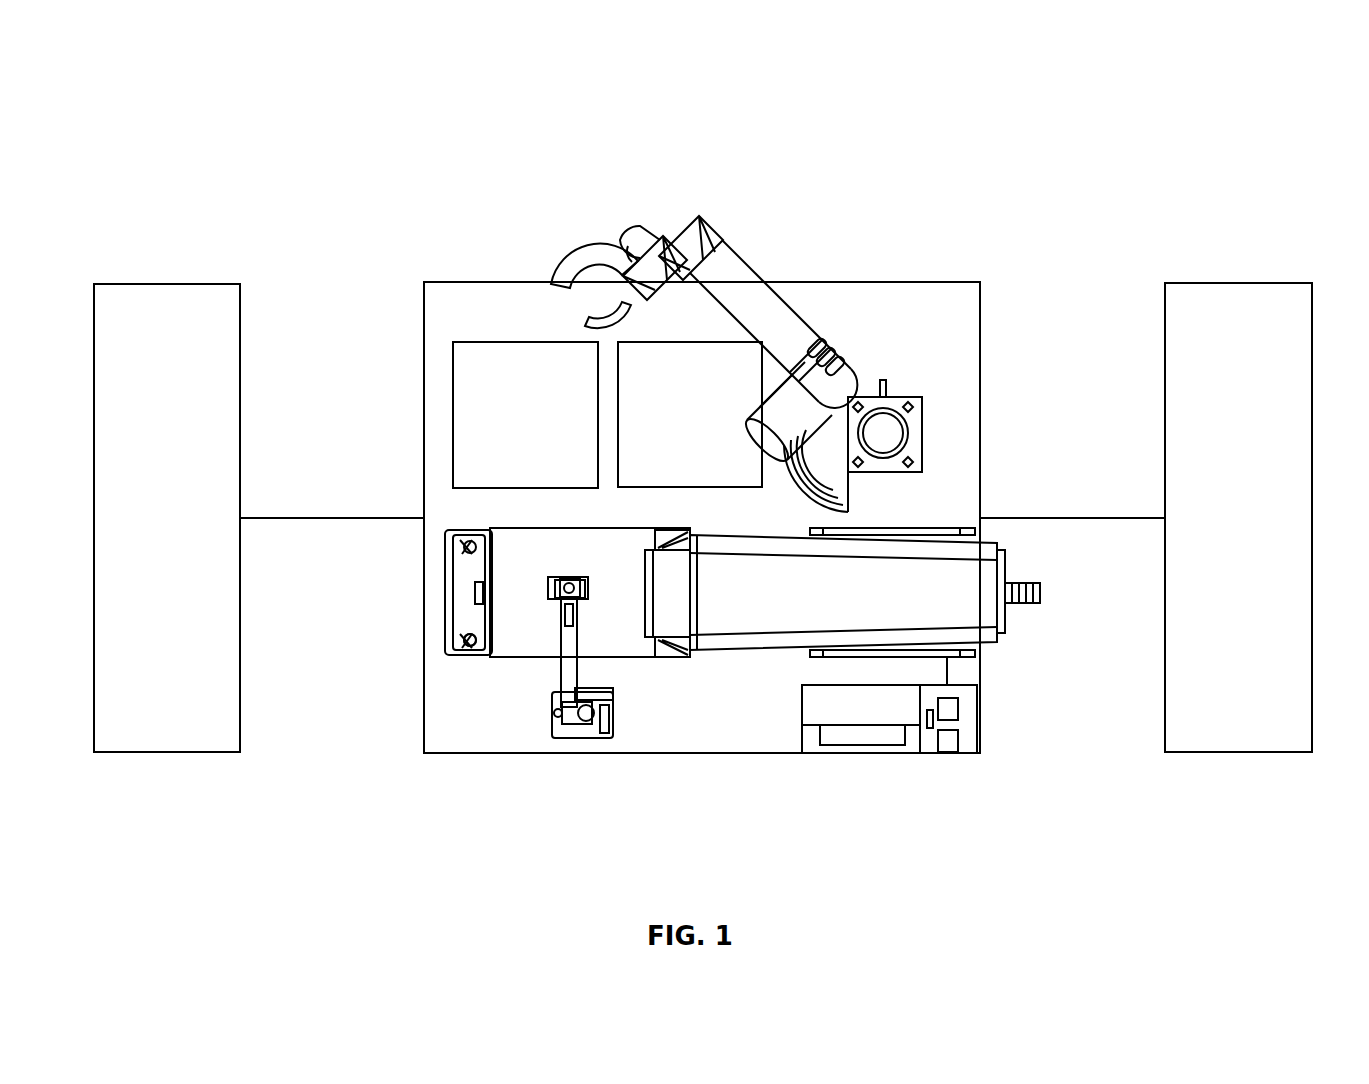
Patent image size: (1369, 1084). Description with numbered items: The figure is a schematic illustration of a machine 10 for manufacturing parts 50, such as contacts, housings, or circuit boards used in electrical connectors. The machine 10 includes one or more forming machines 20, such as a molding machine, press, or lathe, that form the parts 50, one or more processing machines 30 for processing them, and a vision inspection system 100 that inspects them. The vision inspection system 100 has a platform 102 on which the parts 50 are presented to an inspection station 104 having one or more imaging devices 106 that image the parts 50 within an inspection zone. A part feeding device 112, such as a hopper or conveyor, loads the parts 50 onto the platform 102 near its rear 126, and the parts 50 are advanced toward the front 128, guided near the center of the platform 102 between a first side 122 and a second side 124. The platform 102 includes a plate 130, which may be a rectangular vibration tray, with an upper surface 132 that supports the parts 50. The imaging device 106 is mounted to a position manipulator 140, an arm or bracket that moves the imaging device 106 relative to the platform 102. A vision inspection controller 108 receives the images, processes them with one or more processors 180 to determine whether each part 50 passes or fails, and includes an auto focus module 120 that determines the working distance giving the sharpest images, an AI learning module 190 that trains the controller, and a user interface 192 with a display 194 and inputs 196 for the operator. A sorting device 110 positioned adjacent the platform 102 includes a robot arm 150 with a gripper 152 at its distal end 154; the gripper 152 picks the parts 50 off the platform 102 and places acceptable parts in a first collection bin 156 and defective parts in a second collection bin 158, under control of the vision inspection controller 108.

The machine 10 is at (840, 110).
The forming machine 20 is at (1242, 260).
The processing machine 30 is at (158, 240).
The part 50 is at (548, 595).
The vision inspection system 100 is at (872, 220).
The platform 102 is at (603, 635).
The inspection station 104 is at (550, 685).
The imaging device 106 is at (565, 577).
The vision inspection controller 108 is at (948, 700).
The sorting device 110 is at (848, 382).
The part feeding device 112 is at (742, 608).
The auto focus module 120 is at (968, 740).
The first side 122 is at (525, 658).
The second side 124 is at (528, 528).
The rear 126 is at (670, 655).
The front 128 is at (455, 648).
The plate 130 is at (622, 562).
The upper surface 132 is at (603, 553).
The position manipulator 140 is at (568, 670).
The robot arm 150 is at (768, 325).
The gripper 152 is at (565, 253).
The distal end 154 is at (697, 235).
The first collection bin 156 is at (470, 392).
The second collection bin 158 is at (640, 375).
The processor 180 is at (910, 715).
The AI learning module 190 is at (950, 745).
The user interface 192 is at (890, 752).
The display 194 is at (880, 708).
The input 196 is at (843, 738).